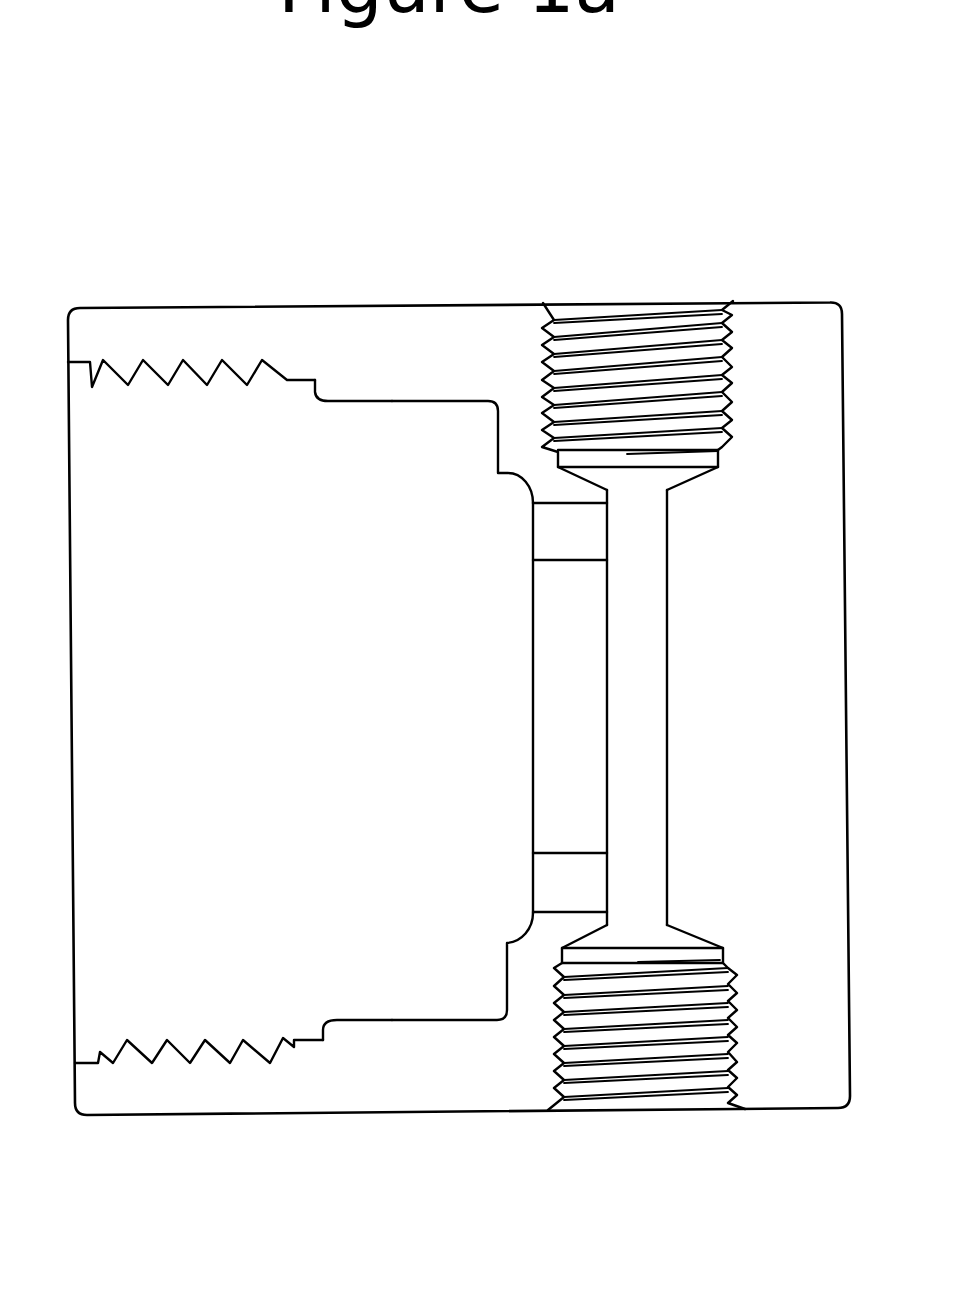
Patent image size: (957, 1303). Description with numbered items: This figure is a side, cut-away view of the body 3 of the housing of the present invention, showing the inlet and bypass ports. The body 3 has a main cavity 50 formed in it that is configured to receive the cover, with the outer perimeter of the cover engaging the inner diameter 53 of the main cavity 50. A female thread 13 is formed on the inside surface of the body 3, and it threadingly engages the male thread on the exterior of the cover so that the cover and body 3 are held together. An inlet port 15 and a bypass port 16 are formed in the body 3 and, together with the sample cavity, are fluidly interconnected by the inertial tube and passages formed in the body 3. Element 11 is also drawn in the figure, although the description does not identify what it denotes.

The body 3 is at (318, 301).
The insert bore wall 11 is at (499, 444).
The female thread 13 is at (148, 358).
The inlet port 15 is at (653, 291).
The bypass port 16 is at (660, 1120).
The main cavity 50 is at (335, 703).
The inner diameter 53 is at (392, 401).